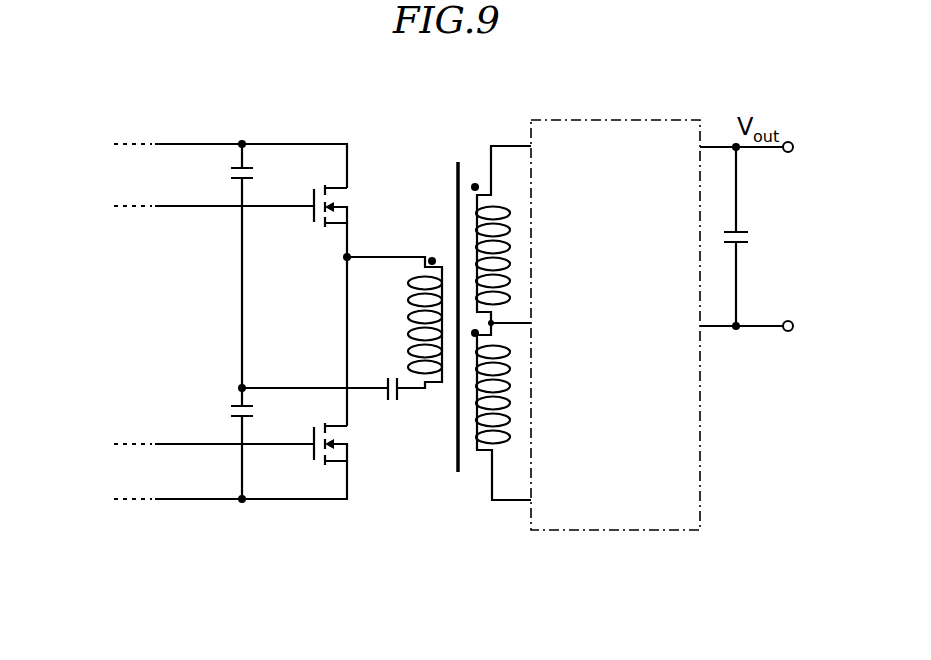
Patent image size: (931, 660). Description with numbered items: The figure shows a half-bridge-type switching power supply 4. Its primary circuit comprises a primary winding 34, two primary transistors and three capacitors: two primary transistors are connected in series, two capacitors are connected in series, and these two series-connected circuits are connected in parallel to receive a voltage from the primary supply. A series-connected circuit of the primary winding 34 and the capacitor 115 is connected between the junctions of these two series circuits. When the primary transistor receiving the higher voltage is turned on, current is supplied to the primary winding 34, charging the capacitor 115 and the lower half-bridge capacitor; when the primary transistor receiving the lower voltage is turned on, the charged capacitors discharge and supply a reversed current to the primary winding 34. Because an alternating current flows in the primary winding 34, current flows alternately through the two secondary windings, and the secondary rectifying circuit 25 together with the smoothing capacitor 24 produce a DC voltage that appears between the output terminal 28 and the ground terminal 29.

The switching power supply 4 is at (80, 80).
The capacitor 115 is at (392, 407).
The primary winding 34 is at (430, 387).
The secondary rectifying circuit 25 is at (578, 118).
The smoothing capacitor 24 is at (747, 237).
The output terminal 28 is at (788, 141).
The ground terminal 29 is at (788, 332).